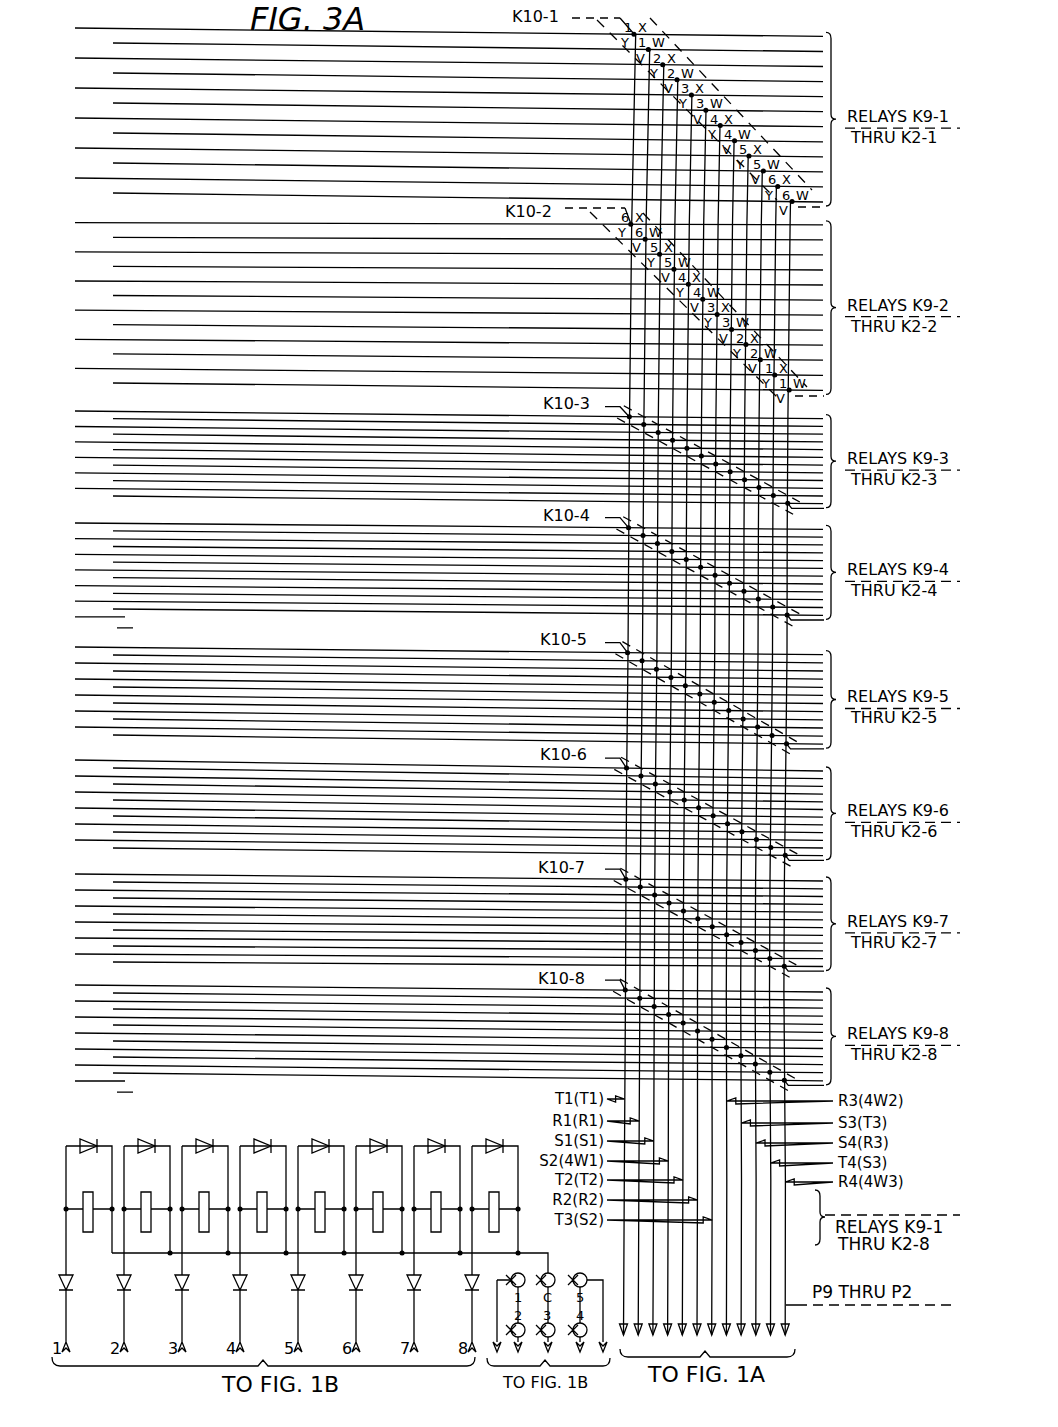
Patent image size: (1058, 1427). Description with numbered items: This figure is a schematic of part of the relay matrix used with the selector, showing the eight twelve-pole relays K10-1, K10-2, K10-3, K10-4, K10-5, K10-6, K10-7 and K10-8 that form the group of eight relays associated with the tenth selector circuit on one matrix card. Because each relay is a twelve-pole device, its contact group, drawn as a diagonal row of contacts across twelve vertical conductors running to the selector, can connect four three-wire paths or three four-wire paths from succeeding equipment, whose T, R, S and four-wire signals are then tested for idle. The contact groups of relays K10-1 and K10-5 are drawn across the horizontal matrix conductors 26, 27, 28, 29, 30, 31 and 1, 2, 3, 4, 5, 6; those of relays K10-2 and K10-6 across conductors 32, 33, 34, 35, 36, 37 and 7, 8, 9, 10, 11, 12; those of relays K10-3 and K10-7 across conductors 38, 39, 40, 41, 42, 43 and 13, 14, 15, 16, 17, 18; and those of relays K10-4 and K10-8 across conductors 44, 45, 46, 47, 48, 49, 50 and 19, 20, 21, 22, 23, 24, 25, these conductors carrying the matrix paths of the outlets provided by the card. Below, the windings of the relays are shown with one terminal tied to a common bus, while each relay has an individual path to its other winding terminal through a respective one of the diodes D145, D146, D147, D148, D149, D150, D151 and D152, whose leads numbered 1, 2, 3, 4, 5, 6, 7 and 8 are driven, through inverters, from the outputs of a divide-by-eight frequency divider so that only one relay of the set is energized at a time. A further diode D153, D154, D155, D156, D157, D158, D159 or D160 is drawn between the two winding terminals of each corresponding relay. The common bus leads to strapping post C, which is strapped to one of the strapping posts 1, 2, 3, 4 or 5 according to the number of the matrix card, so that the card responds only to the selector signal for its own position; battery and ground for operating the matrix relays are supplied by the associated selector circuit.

The strapping post 1 is at (457, 347).
The strapping post 2 is at (457, 370).
The strapping post 3 is at (457, 393).
The strapping post 4 is at (457, 417).
The strapping post 5 is at (457, 440).
The relay winding lead 6 is at (457, 463).
The relay winding lead 7 is at (457, 502).
The relay winding lead 8 is at (457, 524).
The terminal line 9 is at (457, 547).
The terminal line 10 is at (457, 569).
The terminal line 11 is at (457, 591).
The terminal line 12 is at (457, 614).
The terminal line 13 is at (457, 650).
The terminal line 14 is at (457, 666).
The terminal line 15 is at (457, 682).
The terminal line 16 is at (457, 697).
The terminal line 17 is at (457, 713).
The terminal line 18 is at (457, 729).
The terminal line 19 is at (457, 762).
The terminal line 20 is at (457, 777).
The terminal line 21 is at (457, 793).
The terminal line 22 is at (457, 809).
The terminal line 23 is at (457, 825).
The terminal line 24 is at (457, 841).
The terminal line 25 is at (112, 859).
The terminal line 26 is at (436, 337).
The terminal line 27 is at (436, 360).
The terminal line 28 is at (436, 383).
The terminal line 29 is at (436, 406).
The terminal line 30 is at (436, 429).
The terminal line 31 is at (436, 452).
The terminal line 32 is at (436, 492).
The terminal line 33 is at (436, 514).
The terminal line 34 is at (436, 536).
The terminal line 35 is at (436, 558).
The terminal line 36 is at (436, 581).
The terminal line 37 is at (436, 603).
The terminal line 38 is at (436, 642).
The Schmitt trigger 39 is at (436, 657).
The scanner 40 is at (436, 673).
The terminal line 41 is at (436, 689).
The terminal line 42 is at (436, 705).
The terminal line 43 is at (436, 720).
The terminal line 44 is at (436, 753).
The terminal line 45 is at (436, 769).
The terminal line 46 is at (436, 785).
The terminal line 47 is at (436, 801).
The terminal line 48 is at (436, 817).
The terminal line 49 is at (436, 832).
The terminal line 50 is at (90, 849).
The matrix relay K10-1 is at (89, 1210).
The matrix relay K10-2 is at (147, 1210).
The matrix relay K10-3 is at (205, 1210).
The matrix relay K10-4 is at (263, 1210).
The matrix relay K10-5 is at (321, 1210).
The matrix relay K10-6 is at (379, 1210).
The matrix relay K10-7 is at (437, 1210).
The matrix relay K10-8 is at (495, 1210).
The diode D145 is at (85, 1303).
The diode D146 is at (143, 1313).
The diode D147 is at (201, 1313).
The diode D148 is at (259, 1313).
The diode D149 is at (317, 1313).
The diode D150 is at (375, 1313).
The diode D151 is at (433, 1313).
The diode D152 is at (451, 1306).
The diode D153 is at (88, 1135).
The diode D154 is at (146, 1135).
The diode D155 is at (204, 1135).
The diode D156 is at (262, 1135).
The diode D157 is at (320, 1135).
The diode D158 is at (378, 1135).
The diode D159 is at (436, 1135).
The diode D160 is at (494, 1135).